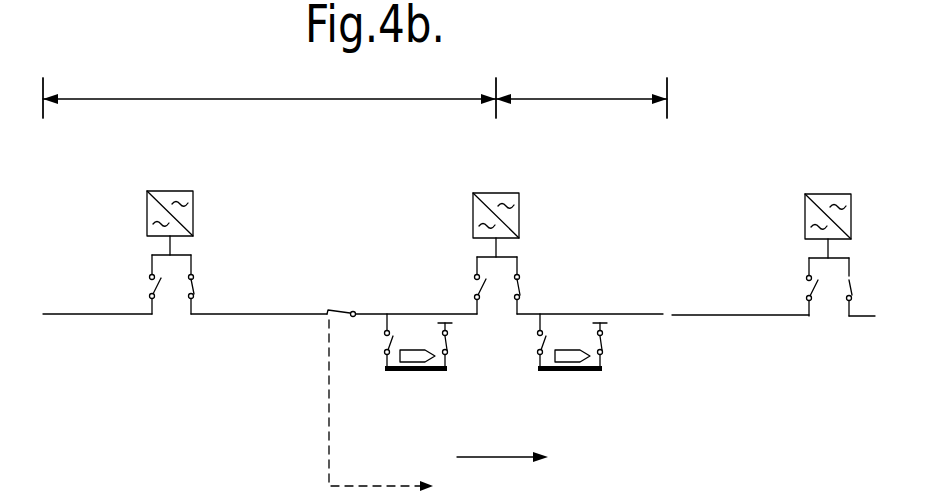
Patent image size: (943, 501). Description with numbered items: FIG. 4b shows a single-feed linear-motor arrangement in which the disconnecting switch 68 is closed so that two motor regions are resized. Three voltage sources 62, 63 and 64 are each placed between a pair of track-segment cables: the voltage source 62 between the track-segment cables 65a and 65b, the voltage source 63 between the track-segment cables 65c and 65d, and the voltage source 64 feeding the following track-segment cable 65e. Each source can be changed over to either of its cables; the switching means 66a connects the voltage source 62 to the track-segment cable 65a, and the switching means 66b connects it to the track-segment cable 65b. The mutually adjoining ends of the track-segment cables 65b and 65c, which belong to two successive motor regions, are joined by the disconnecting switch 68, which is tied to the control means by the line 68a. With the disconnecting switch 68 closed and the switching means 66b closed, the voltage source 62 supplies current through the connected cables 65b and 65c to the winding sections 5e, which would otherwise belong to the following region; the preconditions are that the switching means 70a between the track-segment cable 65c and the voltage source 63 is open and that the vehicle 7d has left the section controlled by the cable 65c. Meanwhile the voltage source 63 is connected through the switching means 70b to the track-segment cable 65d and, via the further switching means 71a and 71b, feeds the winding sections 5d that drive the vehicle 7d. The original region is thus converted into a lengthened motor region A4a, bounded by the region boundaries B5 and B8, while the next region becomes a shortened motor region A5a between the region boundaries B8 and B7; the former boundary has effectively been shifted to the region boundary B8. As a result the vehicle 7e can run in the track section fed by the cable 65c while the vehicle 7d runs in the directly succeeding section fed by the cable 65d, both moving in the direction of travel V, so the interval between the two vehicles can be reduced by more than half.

The voltage source 62 is at (147, 212).
The voltage source 63 is at (497, 192).
The voltage source 64 is at (823, 193).
The track-segment cable 65a is at (67, 314).
The track-segment cable 65b is at (228, 314).
The track-segment cable 65c is at (465, 318).
The track-segment cable 65d is at (525, 318).
The track-segment cable 65e is at (783, 318).
The switching means 66a is at (148, 281).
The switching means 66b is at (194, 291).
The disconnecting switch 68 is at (341, 310).
The line 68a is at (328, 425).
The switching means 70a is at (475, 287).
The switching means 70b is at (520, 292).
The switching means 71a is at (535, 340).
The switching means 71b is at (603, 340).
The winding sections 5e is at (419, 357).
The winding sections 5d is at (586, 362).
The vehicle 7e is at (415, 350).
The vehicle 7d is at (568, 350).
The lengthened motor region A4a is at (269, 94).
The shortened motor region A5a is at (581, 94).
The region boundary B5 is at (45, 91).
The region boundary B7 is at (667, 90).
The region boundary B8 is at (496, 90).
The direction of travel V is at (503, 453).